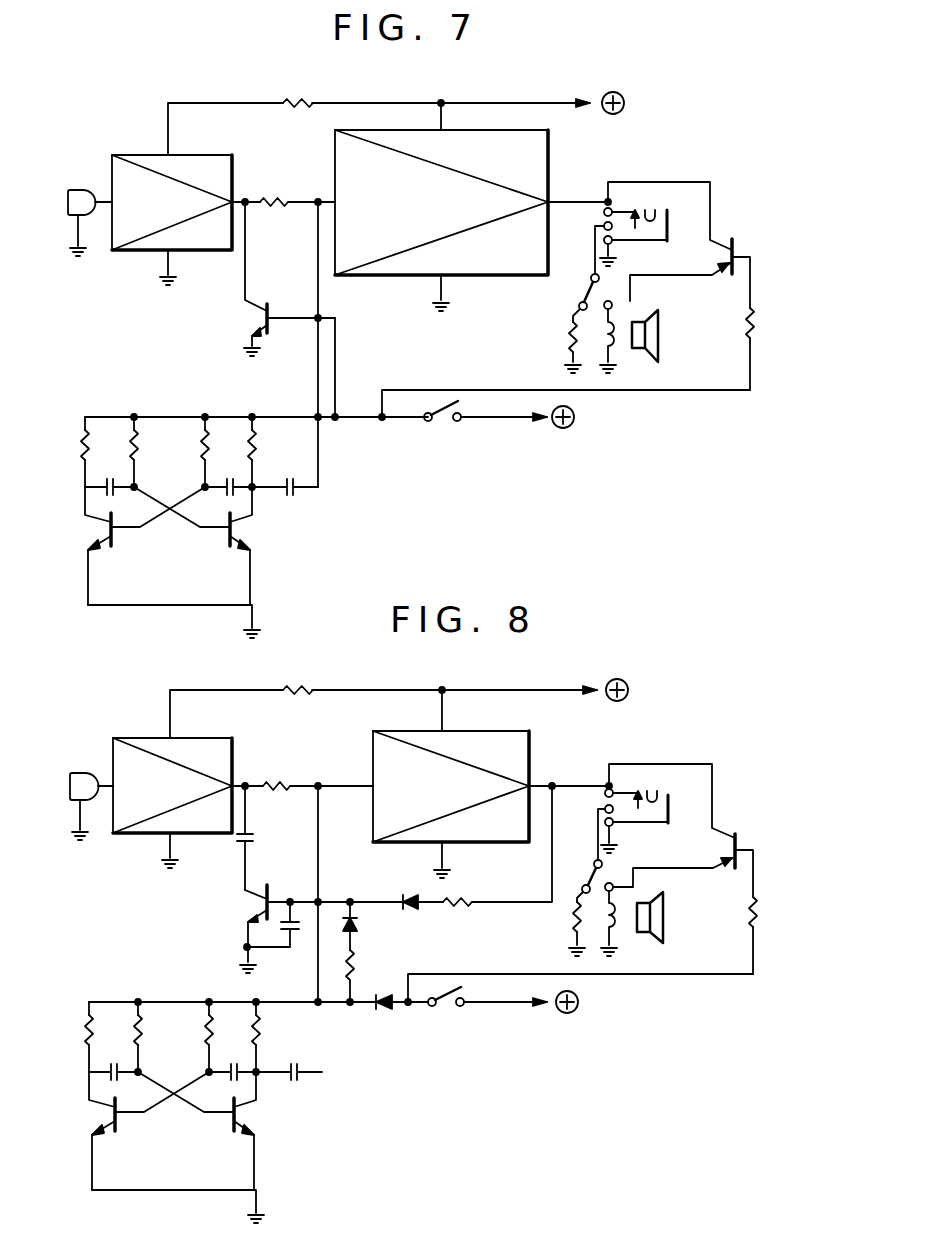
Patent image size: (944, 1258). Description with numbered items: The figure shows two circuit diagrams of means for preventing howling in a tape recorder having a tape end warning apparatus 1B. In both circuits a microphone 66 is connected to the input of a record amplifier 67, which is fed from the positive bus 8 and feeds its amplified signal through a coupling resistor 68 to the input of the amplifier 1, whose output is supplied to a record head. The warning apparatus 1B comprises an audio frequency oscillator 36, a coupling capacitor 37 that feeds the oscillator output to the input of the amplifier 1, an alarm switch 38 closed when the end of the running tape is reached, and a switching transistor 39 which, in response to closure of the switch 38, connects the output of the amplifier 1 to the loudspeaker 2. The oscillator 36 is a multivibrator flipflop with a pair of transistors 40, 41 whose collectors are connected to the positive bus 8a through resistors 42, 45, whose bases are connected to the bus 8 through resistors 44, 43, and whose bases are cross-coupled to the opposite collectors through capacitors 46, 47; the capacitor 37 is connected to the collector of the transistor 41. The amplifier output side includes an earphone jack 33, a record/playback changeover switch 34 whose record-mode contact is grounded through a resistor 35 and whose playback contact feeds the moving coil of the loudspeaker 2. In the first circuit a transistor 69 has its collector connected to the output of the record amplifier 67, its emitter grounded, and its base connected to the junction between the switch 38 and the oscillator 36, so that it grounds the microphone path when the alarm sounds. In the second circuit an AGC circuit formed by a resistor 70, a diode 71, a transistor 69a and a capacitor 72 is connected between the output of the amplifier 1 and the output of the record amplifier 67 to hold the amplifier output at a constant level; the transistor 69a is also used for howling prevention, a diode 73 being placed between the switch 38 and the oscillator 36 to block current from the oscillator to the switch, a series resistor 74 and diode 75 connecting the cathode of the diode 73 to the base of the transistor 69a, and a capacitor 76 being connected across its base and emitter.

In FIG. 7, the amplifier 1 is at (539, 151).
In FIG. 8, the amplifier 1 is at (527, 740).
In FIG. 7, the tape end warning apparatus 1B is at (202, 541).
In FIG. 8, the tape end warning apparatus 1B is at (204, 1126).
In FIG. 7, the loudspeaker 2 is at (658, 336).
In FIG. 8, the loudspeaker 2 is at (663, 905).
In FIG. 7, the positive bus 8 is at (560, 103).
In FIG. 8, the positive bus 8 is at (540, 689).
In FIG. 7, the positive bus 8a is at (372, 420).
In FIG. 8, the positive bus 8a is at (505, 1004).
In FIG. 7, the earphone jack 33 is at (641, 210).
In FIG. 8, the earphone jack 33 is at (654, 793).
In FIG. 7, the record/playback changeover switch 34 is at (592, 283).
In FIG. 8, the record/playback changeover switch 34 is at (595, 868).
In FIG. 7, the resistor 35 is at (571, 334).
In FIG. 7, the audio frequency oscillator 36 is at (183, 580).
In FIG. 8, the audio frequency oscillator 36 is at (178, 1197).
In FIG. 7, the coupling capacitor 37 is at (289, 496).
In FIG. 8, the coupling capacitor 37 is at (292, 1084).
In FIG. 7, the alarm switch 38 is at (455, 420).
In FIG. 8, the alarm switch 38 is at (456, 1006).
In FIG. 7, the switching transistor 39 is at (732, 239).
In FIG. 8, the switching transistor 39 is at (735, 838).
In FIG. 7, the transistor 40 is at (113, 538).
In FIG. 8, the transistor 40 is at (149, 1131).
In FIG. 7, the transistor 41 is at (227, 538).
In FIG. 8, the transistor 41 is at (197, 1131).
In FIG. 7, the resistor 42 is at (90, 440).
In FIG. 8, the resistor 42 is at (106, 1037).
In FIG. 7, the resistor 43 is at (140, 440).
In FIG. 8, the resistor 43 is at (156, 1037).
In FIG. 7, the resistor 44 is at (210, 440).
In FIG. 8, the resistor 44 is at (226, 1037).
In FIG. 7, the resistor 45 is at (257, 440).
In FIG. 8, the resistor 45 is at (273, 1037).
In FIG. 7, the capacitor 46 is at (110, 496).
In FIG. 8, the capacitor 46 is at (118, 1084).
In FIG. 7, the capacitor 47 is at (229, 496).
In FIG. 8, the capacitor 47 is at (226, 1084).
In FIG. 7, the microphone 66 is at (85, 197).
In FIG. 8, the microphone 66 is at (85, 781).
In FIG. 7, the record amplifier 67 is at (212, 155).
In FIG. 8, the record amplifier 67 is at (210, 738).
In FIG. 7, the coupling resistor 68 is at (274, 202).
In FIG. 8, the coupling resistor 68 is at (274, 786).
In FIG. 7, the transistor 69 is at (254, 325).
In FIG. 8, the transistor 69a is at (262, 900).
In FIG. 8, the resistor 70 is at (465, 906).
In FIG. 8, the diode 71 is at (412, 910).
In FIG. 8, the capacitor 72 is at (255, 842).
In FIG. 8, the diode 73 is at (386, 1006).
In FIG. 8, the resistor 74 is at (357, 960).
In FIG. 8, the diode 75 is at (358, 926).
In FIG. 8, the capacitor 76 is at (294, 936).